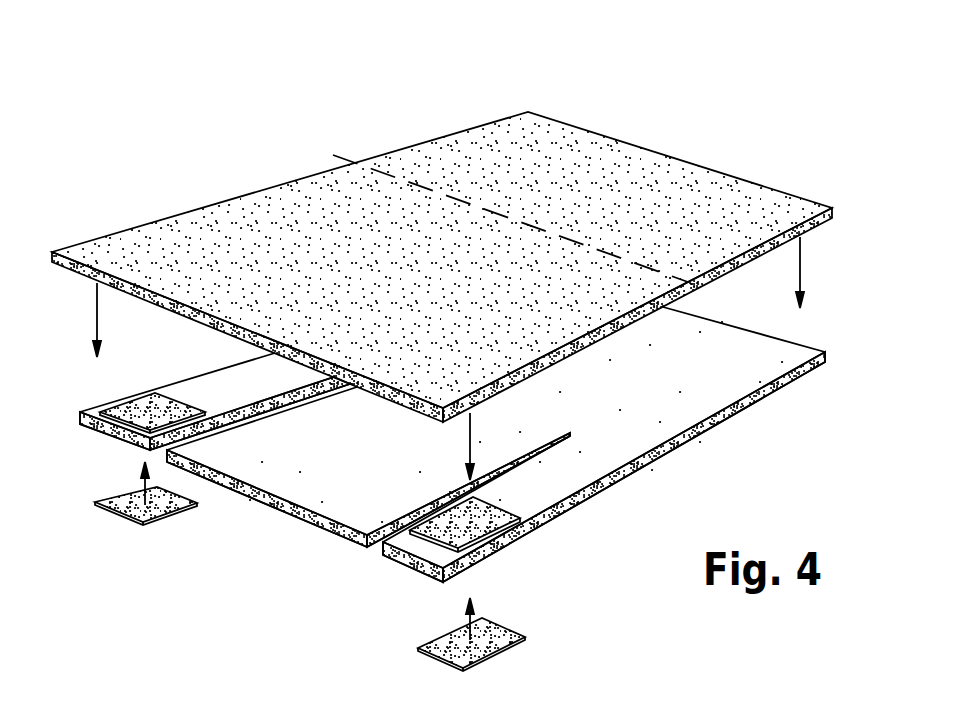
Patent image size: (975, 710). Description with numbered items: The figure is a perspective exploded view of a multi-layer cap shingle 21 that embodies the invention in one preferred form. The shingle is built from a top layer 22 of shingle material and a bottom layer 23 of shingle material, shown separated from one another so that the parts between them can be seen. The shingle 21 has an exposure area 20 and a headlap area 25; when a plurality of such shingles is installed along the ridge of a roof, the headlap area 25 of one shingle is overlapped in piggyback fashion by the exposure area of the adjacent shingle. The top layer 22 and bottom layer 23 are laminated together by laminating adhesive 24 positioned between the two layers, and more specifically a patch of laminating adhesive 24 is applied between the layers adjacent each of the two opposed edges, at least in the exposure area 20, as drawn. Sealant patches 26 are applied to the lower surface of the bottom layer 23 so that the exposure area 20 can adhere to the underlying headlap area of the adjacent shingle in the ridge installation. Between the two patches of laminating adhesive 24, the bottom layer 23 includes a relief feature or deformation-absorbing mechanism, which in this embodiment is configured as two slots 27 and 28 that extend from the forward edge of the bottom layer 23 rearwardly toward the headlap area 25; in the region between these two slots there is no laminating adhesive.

The exposure area 20 is at (487, 313).
The multi-layer cap shingle 21 is at (878, 75).
The top layer 22 is at (642, 147).
The bottom layer 23 is at (767, 357).
The laminating adhesive 24 is at (115, 408).
The headlap area 25 is at (487, 172).
The sealant patches 26 is at (117, 495).
The slot 27 is at (377, 550).
The slot 28 is at (230, 413).